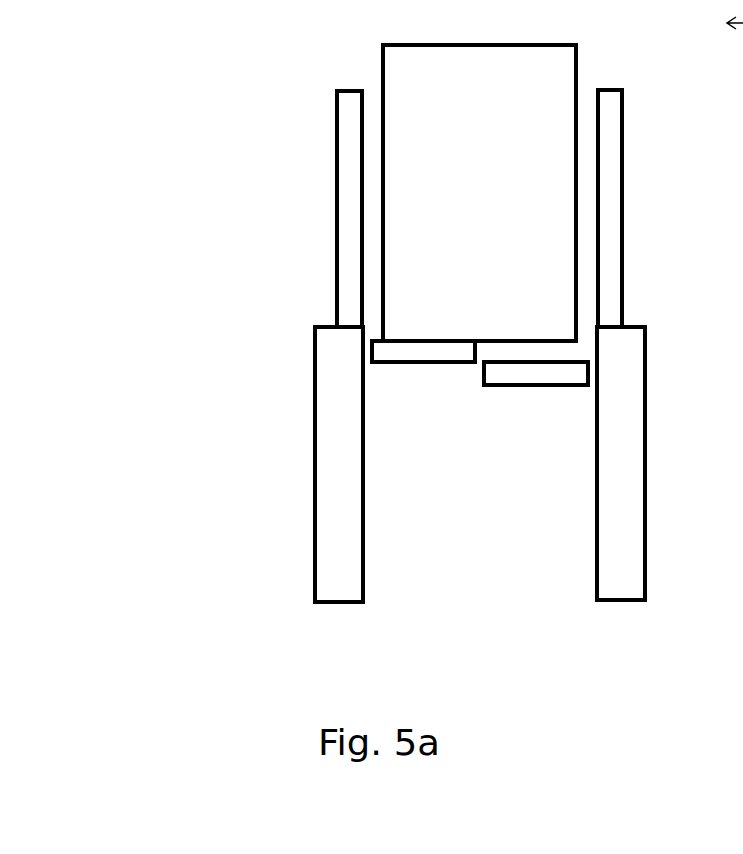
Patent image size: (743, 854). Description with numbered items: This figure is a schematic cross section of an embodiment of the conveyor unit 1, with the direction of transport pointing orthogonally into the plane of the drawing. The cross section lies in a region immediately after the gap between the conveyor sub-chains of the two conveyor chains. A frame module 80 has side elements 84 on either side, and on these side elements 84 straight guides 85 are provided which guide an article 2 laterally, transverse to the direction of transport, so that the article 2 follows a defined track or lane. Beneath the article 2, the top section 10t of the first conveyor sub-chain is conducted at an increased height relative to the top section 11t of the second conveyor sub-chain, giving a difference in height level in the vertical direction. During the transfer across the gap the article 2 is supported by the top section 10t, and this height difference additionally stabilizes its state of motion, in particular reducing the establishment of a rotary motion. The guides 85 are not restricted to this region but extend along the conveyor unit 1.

The conveyor unit 1 is at (553, 615).
The article 2 is at (485, 207).
The frame module 80 is at (585, 527).
The side element 84 is at (333, 473).
The straight guide 85 is at (612, 112).
The top section of the first conveyor sub-chain 10t is at (448, 352).
The top section of the second conveyor sub-chain 11t is at (547, 374).